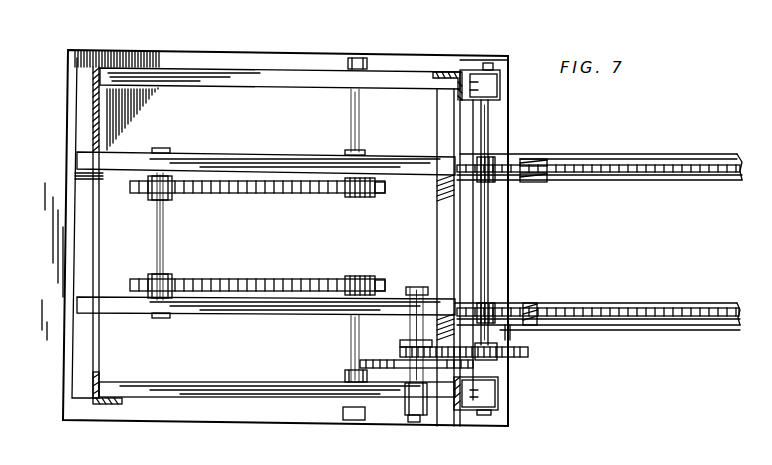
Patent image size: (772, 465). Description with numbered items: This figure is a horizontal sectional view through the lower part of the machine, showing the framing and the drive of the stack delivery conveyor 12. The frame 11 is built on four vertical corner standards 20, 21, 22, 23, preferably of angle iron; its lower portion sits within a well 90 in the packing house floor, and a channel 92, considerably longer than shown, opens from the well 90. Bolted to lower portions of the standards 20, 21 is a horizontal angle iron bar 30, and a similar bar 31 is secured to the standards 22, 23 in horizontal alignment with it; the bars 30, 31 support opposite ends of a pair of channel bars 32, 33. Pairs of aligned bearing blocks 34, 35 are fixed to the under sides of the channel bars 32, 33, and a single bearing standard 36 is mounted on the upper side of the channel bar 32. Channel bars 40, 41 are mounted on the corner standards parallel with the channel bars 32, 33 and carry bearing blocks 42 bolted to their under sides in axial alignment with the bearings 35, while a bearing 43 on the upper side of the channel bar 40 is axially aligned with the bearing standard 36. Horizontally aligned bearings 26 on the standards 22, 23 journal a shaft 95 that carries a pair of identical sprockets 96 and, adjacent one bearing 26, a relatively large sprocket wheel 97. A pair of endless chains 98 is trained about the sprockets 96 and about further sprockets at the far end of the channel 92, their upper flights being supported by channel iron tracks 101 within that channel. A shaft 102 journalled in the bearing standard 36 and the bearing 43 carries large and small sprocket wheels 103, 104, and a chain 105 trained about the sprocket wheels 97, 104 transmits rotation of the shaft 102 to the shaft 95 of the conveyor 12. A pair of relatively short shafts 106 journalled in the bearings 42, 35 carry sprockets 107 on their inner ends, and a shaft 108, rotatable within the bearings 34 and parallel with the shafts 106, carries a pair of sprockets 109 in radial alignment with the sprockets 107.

The frame 11 is at (177, 401).
The stack delivery conveyor 12 is at (649, 164).
The vertical corner standard 20 is at (110, 405).
The vertical corner standard 21 is at (112, 67).
The vertical corner standard 22 is at (449, 410).
The vertical corner standard 23 is at (450, 71).
The bearing 26 is at (500, 88).
The horizontal angle iron bar 30 is at (82, 352).
The bar 31 is at (437, 225).
The channel bar 32 is at (268, 316).
The channel bar 33 is at (290, 160).
The bearing block 34 is at (175, 152).
The bearing block 35 is at (368, 158).
The bearing standard 36 is at (416, 320).
The channel bar 40 is at (215, 383).
The channel bar 41 is at (262, 87).
The bearing block 42 is at (350, 93).
The bearing 43 is at (414, 398).
The well 90 is at (238, 420).
The channel 92 is at (642, 332).
The shaft 95 is at (488, 262).
The sprocket 96 is at (495, 165).
The sprocket wheel 97 is at (522, 349).
The endless chain 98 is at (655, 181).
The channel iron track 101 is at (726, 183).
The shaft 102 is at (413, 422).
The large sprocket wheel 103 is at (402, 368).
The small sprocket wheel 104 is at (408, 341).
The chain 105 is at (528, 354).
The short shaft 106 is at (360, 125).
The sprocket 107 is at (385, 190).
The shaft 108 is at (168, 233).
The sprocket 109 is at (152, 192).